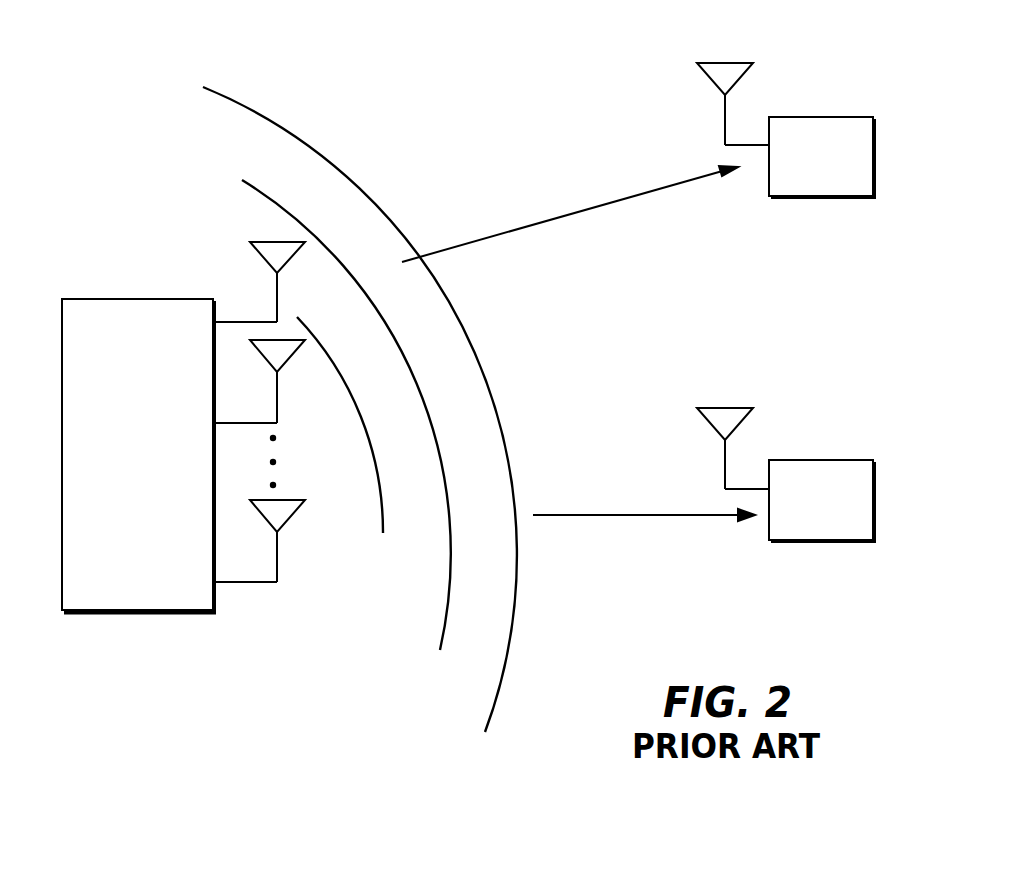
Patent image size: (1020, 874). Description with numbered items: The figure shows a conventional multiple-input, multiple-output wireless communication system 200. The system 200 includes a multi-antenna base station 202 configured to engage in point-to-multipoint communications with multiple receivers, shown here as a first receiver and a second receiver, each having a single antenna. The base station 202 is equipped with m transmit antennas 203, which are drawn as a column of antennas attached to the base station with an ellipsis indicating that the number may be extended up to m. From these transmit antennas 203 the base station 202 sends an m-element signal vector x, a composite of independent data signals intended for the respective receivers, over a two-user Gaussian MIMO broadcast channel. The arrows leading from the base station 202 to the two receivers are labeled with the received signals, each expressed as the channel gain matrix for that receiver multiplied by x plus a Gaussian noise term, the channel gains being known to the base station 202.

The MIMO wireless communication system 200 is at (896, 58).
The multi-antenna base station 202 is at (128, 299).
The transmit antennas 203 is at (250, 322).